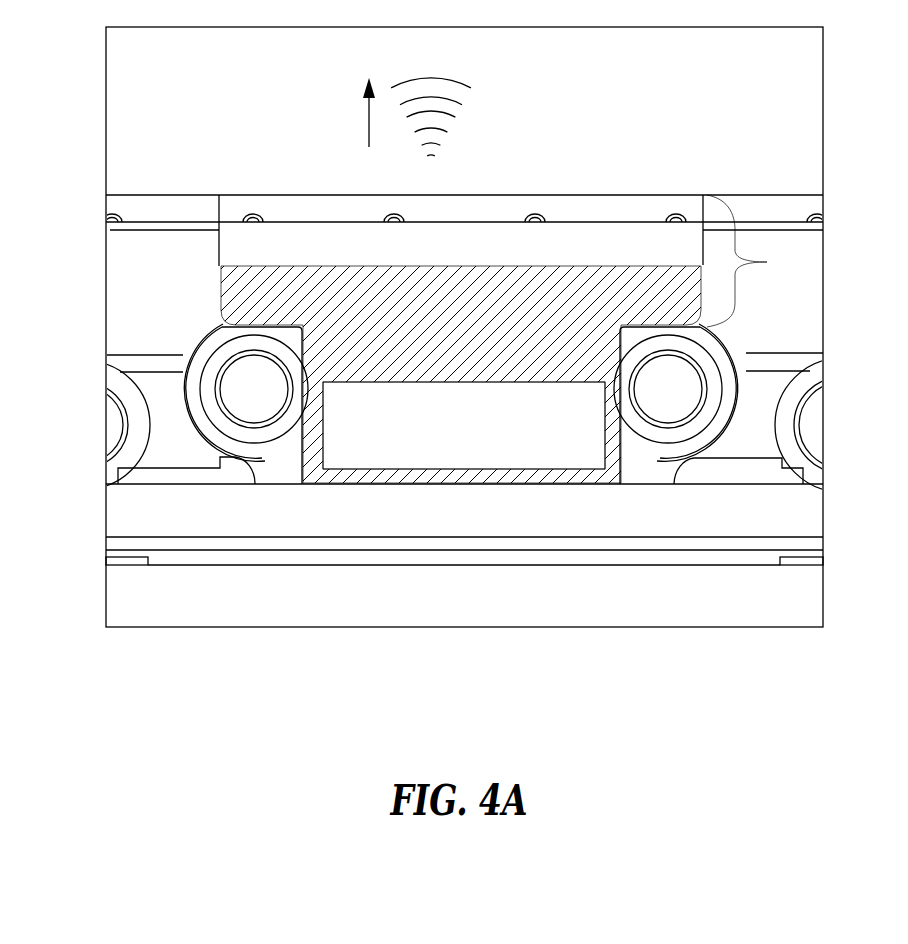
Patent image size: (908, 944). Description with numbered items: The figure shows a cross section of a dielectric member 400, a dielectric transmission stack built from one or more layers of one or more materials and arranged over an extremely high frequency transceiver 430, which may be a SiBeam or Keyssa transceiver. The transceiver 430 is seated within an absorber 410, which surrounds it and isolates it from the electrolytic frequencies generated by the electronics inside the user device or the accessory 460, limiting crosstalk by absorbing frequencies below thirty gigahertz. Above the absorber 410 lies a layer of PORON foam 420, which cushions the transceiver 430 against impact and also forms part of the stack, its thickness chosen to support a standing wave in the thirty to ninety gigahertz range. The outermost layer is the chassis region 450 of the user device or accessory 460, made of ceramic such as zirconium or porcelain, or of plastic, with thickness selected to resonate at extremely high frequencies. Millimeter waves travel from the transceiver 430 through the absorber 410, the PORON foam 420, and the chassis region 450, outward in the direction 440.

The dielectric member 400 is at (767, 262).
The absorber 410 is at (238, 294).
The PORON foam 420 is at (238, 249).
The extremely high frequency transceiver 430 is at (446, 448).
The direction 440 is at (368, 138).
The chassis region 450 is at (282, 208).
The accessory 460 is at (107, 427).